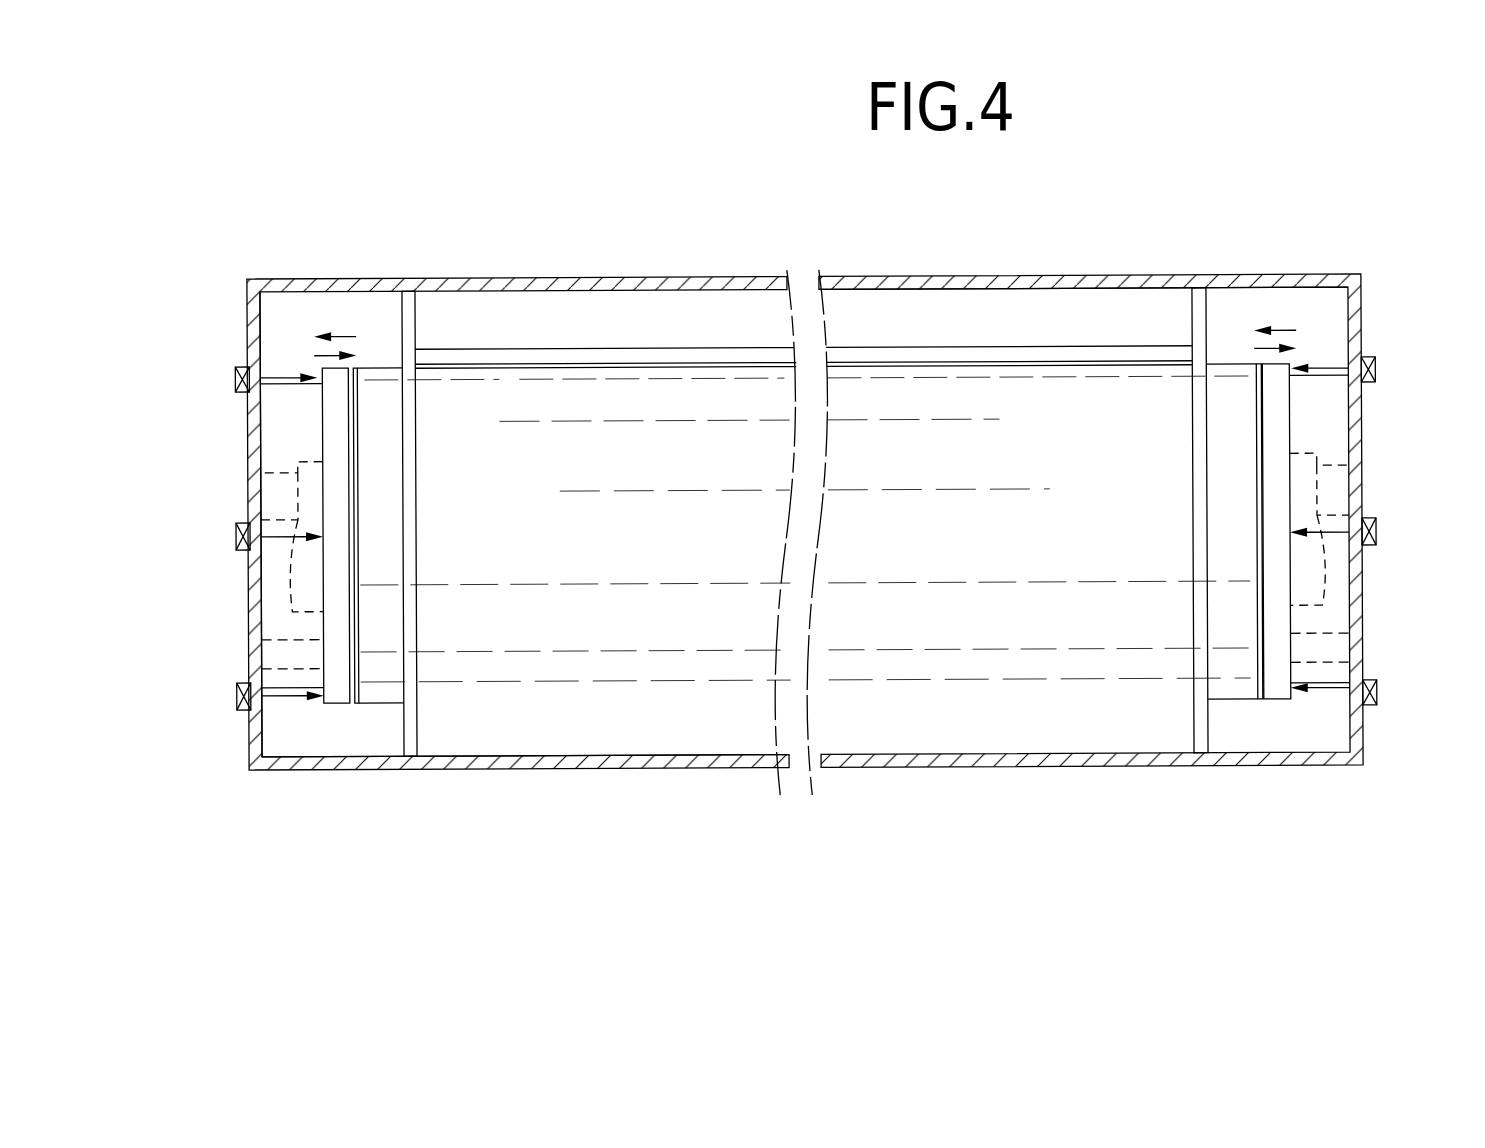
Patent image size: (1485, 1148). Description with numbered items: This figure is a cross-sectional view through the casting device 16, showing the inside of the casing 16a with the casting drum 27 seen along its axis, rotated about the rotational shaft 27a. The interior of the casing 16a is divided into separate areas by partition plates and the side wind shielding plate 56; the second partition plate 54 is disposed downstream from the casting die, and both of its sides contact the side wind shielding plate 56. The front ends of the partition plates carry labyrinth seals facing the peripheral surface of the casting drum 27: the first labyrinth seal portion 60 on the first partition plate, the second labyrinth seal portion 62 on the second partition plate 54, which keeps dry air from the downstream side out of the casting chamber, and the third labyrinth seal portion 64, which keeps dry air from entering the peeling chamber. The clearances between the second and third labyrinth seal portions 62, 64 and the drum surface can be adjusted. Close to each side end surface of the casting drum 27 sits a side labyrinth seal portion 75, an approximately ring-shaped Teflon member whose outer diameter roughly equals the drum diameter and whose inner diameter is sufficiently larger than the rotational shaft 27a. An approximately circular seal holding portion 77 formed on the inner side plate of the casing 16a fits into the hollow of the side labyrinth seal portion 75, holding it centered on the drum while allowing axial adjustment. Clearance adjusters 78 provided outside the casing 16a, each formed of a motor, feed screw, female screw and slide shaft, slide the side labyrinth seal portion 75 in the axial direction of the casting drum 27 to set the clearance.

The casting device 16 is at (813, 814).
The casing 16a is at (588, 768).
The casting drum 27 is at (1033, 703).
The rotational shaft 27a is at (310, 457).
The second partition plate 54 is at (880, 326).
The side wind shielding plate 56 is at (411, 306).
The first labyrinth seal portion 60 is at (270, 497).
The second labyrinth seal portion 62 is at (669, 360).
The third labyrinth seal portion 64 is at (272, 660).
The side labyrinth seal portion 75 is at (340, 701).
The seal holding portion 77 is at (296, 417).
The clearance adjuster 78 is at (236, 366).